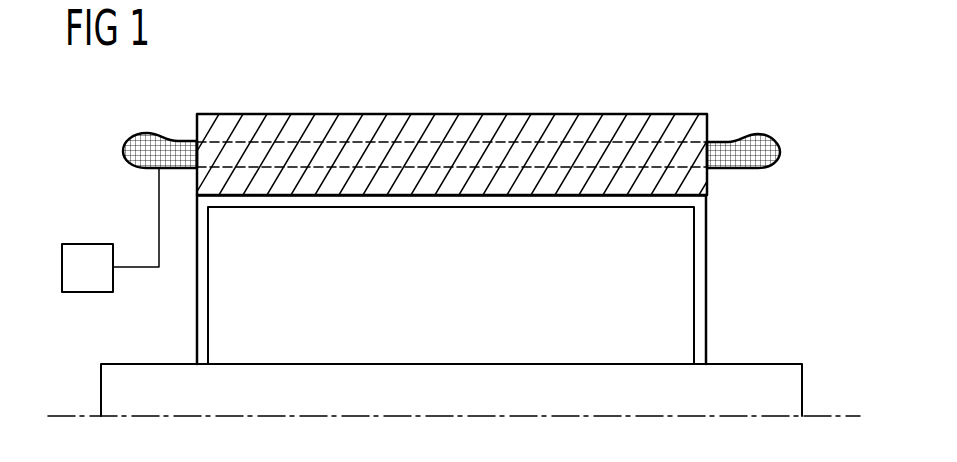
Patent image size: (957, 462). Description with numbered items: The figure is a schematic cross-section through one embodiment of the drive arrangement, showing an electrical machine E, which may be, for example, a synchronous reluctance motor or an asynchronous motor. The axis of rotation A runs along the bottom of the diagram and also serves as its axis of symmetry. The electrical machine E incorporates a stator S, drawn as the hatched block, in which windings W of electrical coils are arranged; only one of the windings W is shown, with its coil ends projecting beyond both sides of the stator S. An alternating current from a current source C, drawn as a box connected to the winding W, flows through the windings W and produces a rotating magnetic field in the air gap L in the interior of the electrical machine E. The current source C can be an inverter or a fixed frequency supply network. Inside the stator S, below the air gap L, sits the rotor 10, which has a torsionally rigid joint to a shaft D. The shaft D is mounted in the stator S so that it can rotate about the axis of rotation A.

The electrical machine E is at (740, 82).
The stator S is at (623, 120).
The windings W is at (565, 142).
The air gap L is at (687, 202).
The rotor 10 is at (677, 251).
The current source C is at (84, 244).
The shaft D is at (778, 363).
The axis of rotation A is at (847, 415).